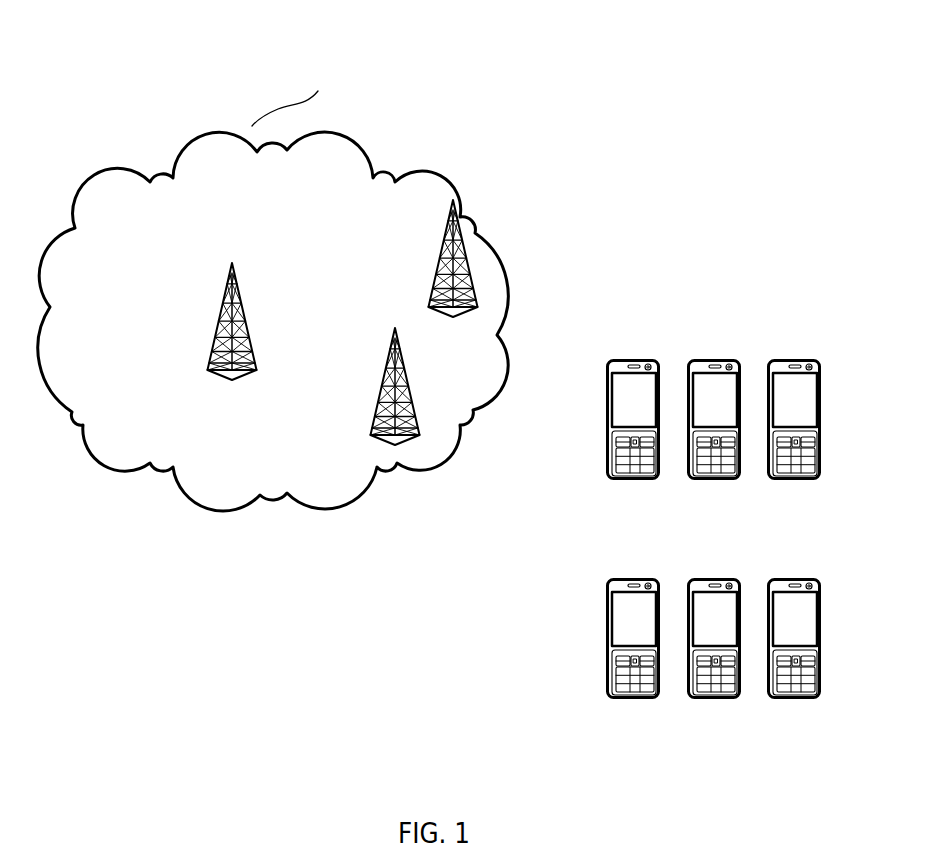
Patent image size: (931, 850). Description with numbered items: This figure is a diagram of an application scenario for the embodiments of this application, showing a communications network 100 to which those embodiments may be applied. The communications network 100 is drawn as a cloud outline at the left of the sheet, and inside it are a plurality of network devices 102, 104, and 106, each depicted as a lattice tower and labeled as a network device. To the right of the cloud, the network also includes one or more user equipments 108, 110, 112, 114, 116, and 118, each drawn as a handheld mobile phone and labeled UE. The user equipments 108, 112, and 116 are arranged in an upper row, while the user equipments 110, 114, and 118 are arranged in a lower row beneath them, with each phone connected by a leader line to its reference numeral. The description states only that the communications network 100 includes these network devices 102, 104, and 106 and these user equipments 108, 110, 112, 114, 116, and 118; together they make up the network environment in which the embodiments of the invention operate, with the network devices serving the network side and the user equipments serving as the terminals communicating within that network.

The communications network 100 is at (273, 261).
The network device 102 is at (365, 462).
The network device 104 is at (423, 335).
The network device 106 is at (202, 398).
The user equipment 108 is at (633, 358).
The user equipment 110 is at (630, 700).
The user equipment 112 is at (713, 358).
The user equipment 114 is at (711, 700).
The user equipment 116 is at (794, 358).
The user equipment 118 is at (794, 700).